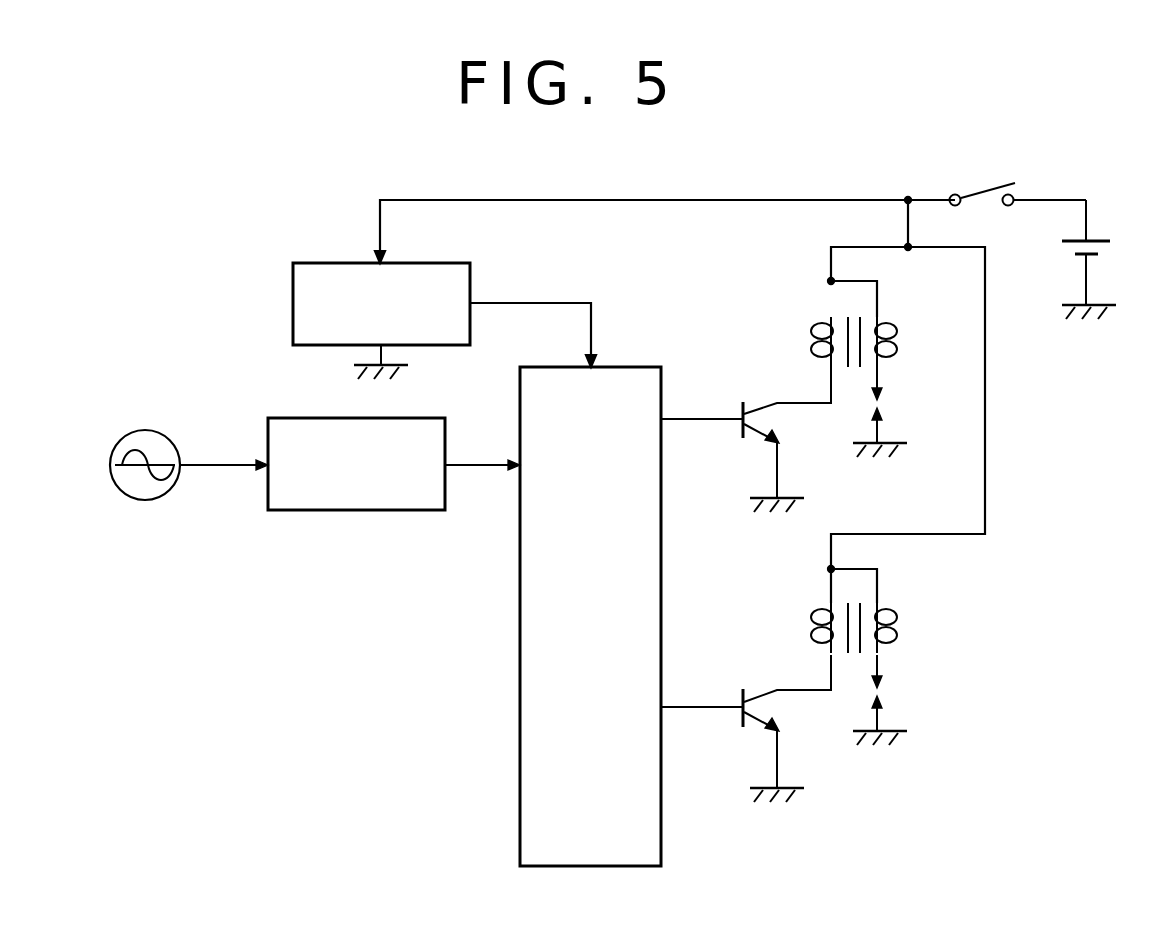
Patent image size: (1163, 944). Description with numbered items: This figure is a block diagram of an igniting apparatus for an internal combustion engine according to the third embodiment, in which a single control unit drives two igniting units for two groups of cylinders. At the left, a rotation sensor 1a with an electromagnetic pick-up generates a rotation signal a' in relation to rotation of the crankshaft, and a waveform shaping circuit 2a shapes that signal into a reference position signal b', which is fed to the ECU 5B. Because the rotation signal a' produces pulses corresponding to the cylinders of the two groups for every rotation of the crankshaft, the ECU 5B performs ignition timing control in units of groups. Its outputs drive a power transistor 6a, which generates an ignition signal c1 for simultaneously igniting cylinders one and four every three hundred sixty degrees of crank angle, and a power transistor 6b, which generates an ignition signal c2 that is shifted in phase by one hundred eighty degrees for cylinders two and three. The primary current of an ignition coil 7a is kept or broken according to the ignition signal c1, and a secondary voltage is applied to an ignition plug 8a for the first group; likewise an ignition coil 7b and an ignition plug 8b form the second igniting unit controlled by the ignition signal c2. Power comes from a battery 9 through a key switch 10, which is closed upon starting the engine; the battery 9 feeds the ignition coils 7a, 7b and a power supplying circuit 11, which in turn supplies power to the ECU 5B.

The rotation sensor 1a is at (147, 500).
The rotation signal a' is at (209, 419).
The waveform shaping circuit 2a is at (391, 510).
The reference position signal b' is at (487, 420).
The power supplying circuit 11 is at (471, 285).
The ECU 5B is at (661, 835).
The power transistor 6a is at (768, 420).
The power transistor 6b is at (768, 708).
The ignition signal c1 is at (790, 403).
The ignition signal c2 is at (790, 690).
The ignition coil 7a is at (829, 318).
The ignition coil 7b is at (828, 605).
The ignition plug 8a is at (885, 403).
The ignition plug 8b is at (885, 690).
The key switch 10 is at (980, 183).
The battery 9 is at (1102, 237).